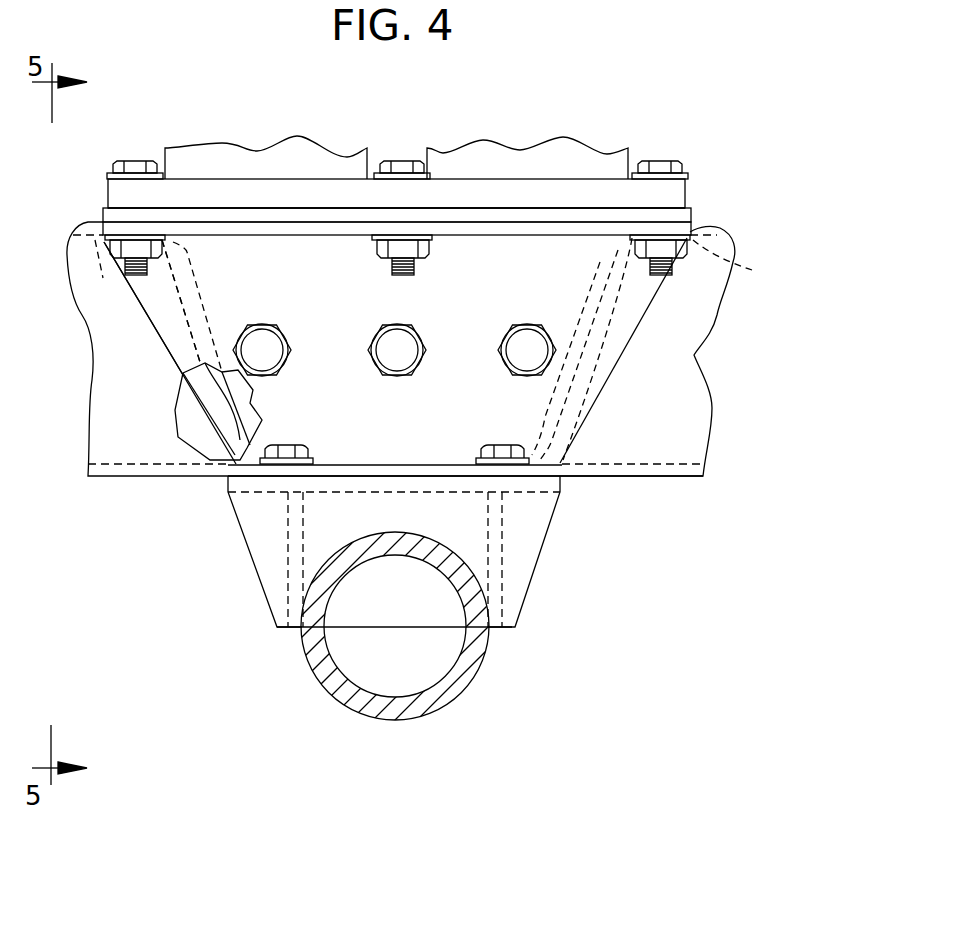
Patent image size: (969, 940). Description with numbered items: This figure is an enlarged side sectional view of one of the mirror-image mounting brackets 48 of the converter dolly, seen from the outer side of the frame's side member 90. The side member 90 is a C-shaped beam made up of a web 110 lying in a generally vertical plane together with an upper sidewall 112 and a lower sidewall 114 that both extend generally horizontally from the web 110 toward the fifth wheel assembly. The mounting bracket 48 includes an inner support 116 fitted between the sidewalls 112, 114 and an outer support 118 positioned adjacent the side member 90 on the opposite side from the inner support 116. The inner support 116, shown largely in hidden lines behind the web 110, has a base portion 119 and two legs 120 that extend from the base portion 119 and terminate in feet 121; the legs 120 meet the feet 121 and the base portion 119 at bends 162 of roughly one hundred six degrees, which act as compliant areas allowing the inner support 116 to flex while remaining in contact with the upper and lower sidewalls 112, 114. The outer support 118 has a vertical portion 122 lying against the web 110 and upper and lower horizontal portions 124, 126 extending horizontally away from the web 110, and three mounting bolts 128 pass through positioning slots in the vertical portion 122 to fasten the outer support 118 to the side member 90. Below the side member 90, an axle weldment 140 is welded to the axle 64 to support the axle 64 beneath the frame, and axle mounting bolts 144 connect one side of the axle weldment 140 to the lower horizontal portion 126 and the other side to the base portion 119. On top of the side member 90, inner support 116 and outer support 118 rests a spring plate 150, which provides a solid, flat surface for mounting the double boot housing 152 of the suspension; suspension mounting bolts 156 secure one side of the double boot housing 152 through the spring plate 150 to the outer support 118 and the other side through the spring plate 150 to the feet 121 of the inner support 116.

The mounting bracket 48 is at (810, 140).
The axle 64 is at (483, 657).
The side member 90 is at (694, 355).
The web 110 is at (677, 388).
The upper sidewall 112 is at (720, 228).
The lower sidewall 114 is at (665, 468).
The inner support 116 is at (220, 407).
The outer support 118 is at (158, 318).
The base portion 119 is at (372, 401).
The legs 120 is at (208, 313).
The feet 121 is at (445, 274).
The vertical portion 122 is at (354, 316).
The upper horizontal portion 124 is at (555, 228).
The lower horizontal portion 126 is at (373, 470).
The mounting bolts 128 is at (524, 350).
The axle weldment 140 is at (530, 525).
The axle mounting bolts 144 is at (288, 447).
The spring plate 150 is at (680, 215).
The double boot housing 152 is at (560, 192).
The suspension mounting bolts 156 is at (132, 158).
The bends 162 is at (190, 253).